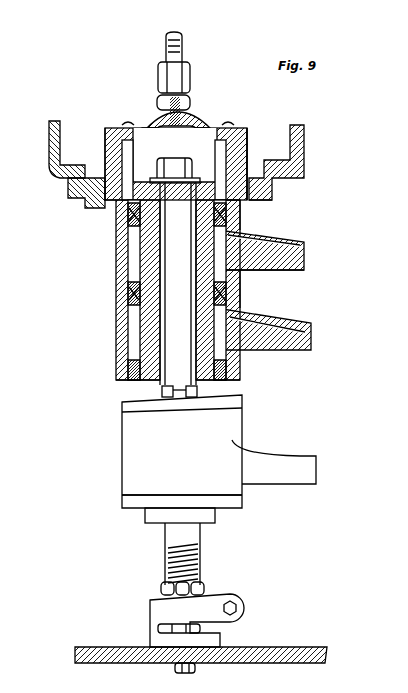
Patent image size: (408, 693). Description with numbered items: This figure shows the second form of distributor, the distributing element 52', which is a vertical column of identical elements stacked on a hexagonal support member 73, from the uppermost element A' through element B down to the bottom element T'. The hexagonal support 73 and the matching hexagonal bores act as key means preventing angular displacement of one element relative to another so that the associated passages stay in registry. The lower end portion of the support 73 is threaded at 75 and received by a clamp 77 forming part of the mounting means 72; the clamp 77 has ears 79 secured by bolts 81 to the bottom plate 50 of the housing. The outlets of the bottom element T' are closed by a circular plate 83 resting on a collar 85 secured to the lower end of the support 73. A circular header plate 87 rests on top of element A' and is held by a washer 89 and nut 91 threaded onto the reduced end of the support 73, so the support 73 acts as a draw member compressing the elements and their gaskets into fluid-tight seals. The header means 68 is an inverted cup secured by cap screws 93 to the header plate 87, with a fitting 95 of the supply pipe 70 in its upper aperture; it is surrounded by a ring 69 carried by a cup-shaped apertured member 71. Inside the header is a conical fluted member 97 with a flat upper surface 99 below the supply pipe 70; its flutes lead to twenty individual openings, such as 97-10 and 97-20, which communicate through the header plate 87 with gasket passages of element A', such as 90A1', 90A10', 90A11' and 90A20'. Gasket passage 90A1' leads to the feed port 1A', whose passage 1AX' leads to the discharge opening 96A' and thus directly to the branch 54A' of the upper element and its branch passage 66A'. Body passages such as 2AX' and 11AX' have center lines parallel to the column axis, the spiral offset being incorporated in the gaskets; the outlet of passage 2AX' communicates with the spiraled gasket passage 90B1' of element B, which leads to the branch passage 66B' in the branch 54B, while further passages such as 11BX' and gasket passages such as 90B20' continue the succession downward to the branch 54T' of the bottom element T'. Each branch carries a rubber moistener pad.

The supply pipe 70 is at (172, 32).
The fitting 95 is at (191, 106).
The flat upper surface 99 is at (178, 106).
The washer 89 is at (207, 122).
The cap screws 93 is at (128, 125).
The opening 97-10 is at (128, 180).
The nut 91 is at (170, 166).
The support member 73 is at (162, 393).
The header means 68 is at (128, 178).
The cup-shaped apertured member 71 is at (49, 143).
The ring 69 is at (68, 190).
The opening 97-20 is at (262, 160).
The header plate 87 is at (256, 176).
The conical fluted member 97 is at (240, 140).
The upper element A' is at (151, 290).
The branch 54A' is at (288, 250).
The plate lower surface 66A' is at (292, 260).
The discharge opening 96A' is at (277, 232).
The branch 54B is at (312, 322).
The branch passage 66B' is at (295, 331).
The passage 2AX' is at (270, 289).
The passage 11AX' is at (149, 290).
The gasket passage 90A10' is at (143, 216).
The gasket passage 90A11' is at (96, 227).
The gasket passage 90A20' is at (293, 186).
The gasket member passage 90A1' is at (289, 194).
The feed port 1A' is at (282, 203).
The passage 1AX' is at (281, 215).
The element B is at (108, 347).
The passage 11BX' is at (105, 308).
The gasket passage 90B20' is at (261, 295).
The spiraled passage 90B1' is at (257, 303).
The distributing element 52' is at (150, 370).
The bottom element T' is at (156, 451).
The branch 54T' is at (289, 456).
The circular plate 83 is at (135, 505).
The collar 85 is at (148, 525).
The threaded lower end portion 75 is at (168, 542).
The mounting means 72 is at (134, 594).
The clamp 77 is at (228, 600).
The ears 79 is at (179, 628).
The bottom plate 50 is at (314, 660).
The bolts 81 is at (178, 672).